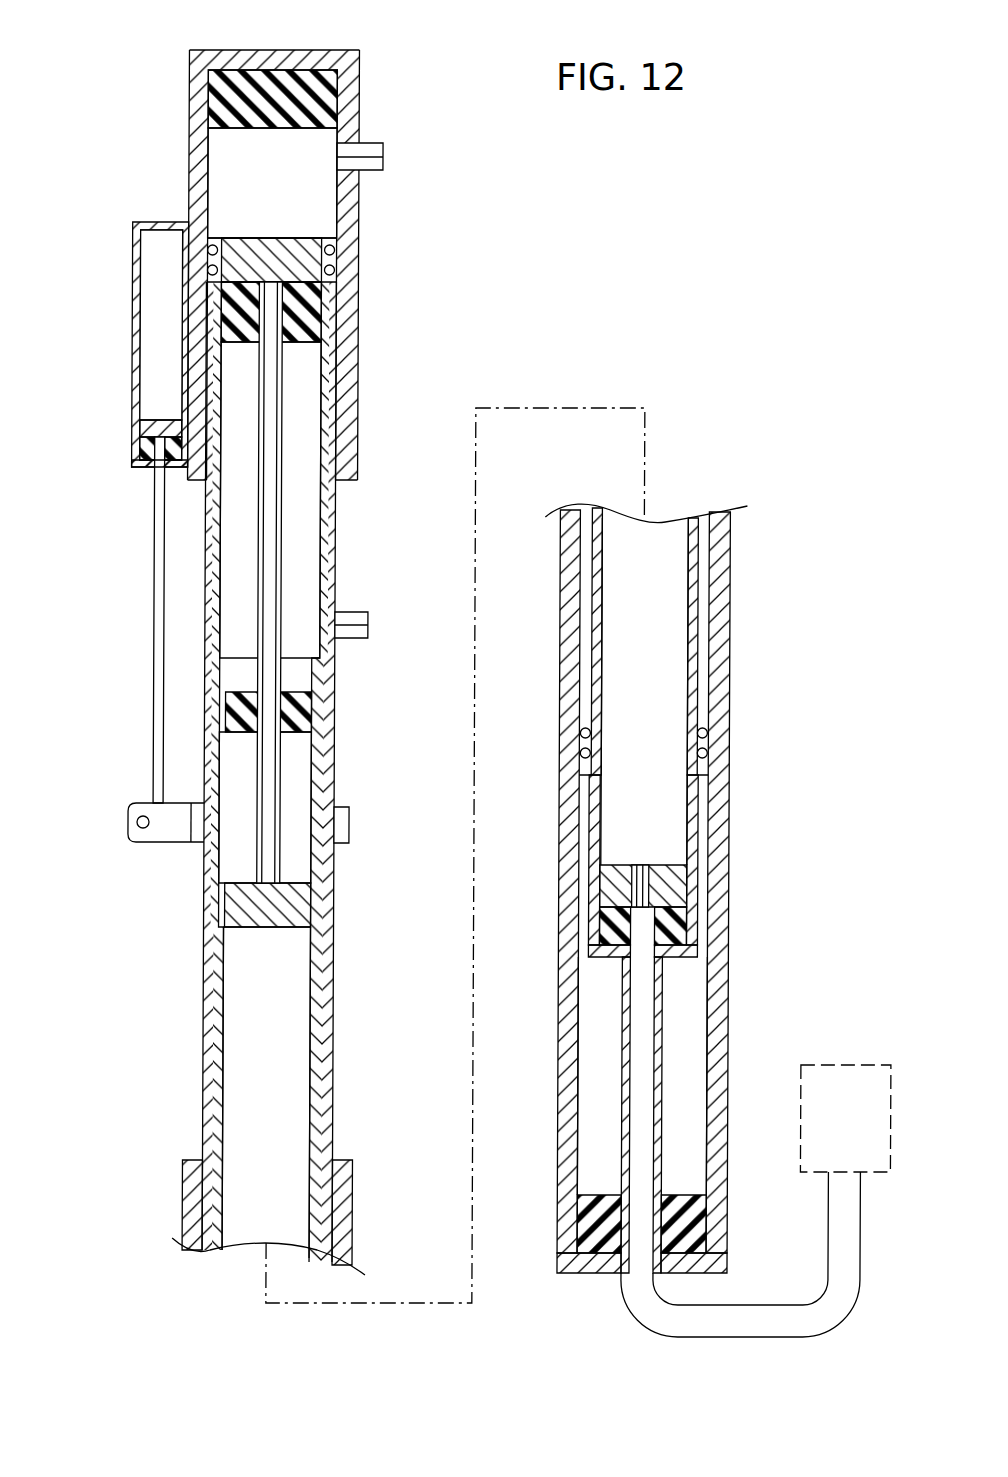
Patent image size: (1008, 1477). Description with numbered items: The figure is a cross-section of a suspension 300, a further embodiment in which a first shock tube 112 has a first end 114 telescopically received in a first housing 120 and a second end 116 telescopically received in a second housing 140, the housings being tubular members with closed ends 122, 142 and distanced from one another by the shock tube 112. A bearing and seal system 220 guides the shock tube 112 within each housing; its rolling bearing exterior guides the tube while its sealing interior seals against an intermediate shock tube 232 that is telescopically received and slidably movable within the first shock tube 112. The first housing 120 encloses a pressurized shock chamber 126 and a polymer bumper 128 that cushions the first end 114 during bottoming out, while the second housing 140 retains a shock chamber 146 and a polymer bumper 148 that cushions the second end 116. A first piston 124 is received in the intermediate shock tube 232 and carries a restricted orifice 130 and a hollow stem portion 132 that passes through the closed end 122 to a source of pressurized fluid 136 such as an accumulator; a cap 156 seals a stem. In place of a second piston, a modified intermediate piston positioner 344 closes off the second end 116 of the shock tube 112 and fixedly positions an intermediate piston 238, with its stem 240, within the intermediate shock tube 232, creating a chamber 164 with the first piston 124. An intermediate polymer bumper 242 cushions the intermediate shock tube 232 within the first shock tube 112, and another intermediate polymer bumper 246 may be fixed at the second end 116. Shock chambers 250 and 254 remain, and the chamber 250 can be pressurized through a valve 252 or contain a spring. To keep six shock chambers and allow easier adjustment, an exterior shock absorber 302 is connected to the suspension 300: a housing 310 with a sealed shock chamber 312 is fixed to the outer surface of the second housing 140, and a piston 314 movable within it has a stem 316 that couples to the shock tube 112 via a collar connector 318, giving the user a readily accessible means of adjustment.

The shock tube 112 is at (326, 982).
The first end 114 is at (703, 667).
The second end 116 is at (330, 355).
The first housing 120 is at (721, 862).
The closed end 122 is at (691, 1263).
The first piston 124 is at (604, 892).
The shock chamber 126 is at (689, 988).
The polymer bumper 128 is at (700, 1213).
The restricted orifice 130 is at (649, 867).
The stem portion 132 is at (624, 1118).
The source of pressurized fluid 136 is at (825, 1065).
The second housing 140 is at (348, 207).
The closed end 142 is at (220, 53).
The second sealed shock chamber 146 is at (222, 169).
The polymer bumper 148 is at (215, 79).
The cap 156 is at (638, 1293).
The chamber 164 is at (244, 1107).
The bearing and seal system 220 is at (345, 253).
The intermediate shock tube 232 is at (596, 808).
The intermediate piston 238 is at (295, 898).
The stem 240 is at (283, 533).
The intermediate polymer bumper 242 is at (306, 699).
The intermediate polymer bumper 246 is at (337, 309).
The shock chamber 250 is at (303, 507).
The valve 252 is at (350, 612).
The shock chamber 254 is at (293, 775).
The suspension 300 is at (565, 328).
The exterior shock absorber 302 is at (118, 483).
The housing 310 is at (130, 266).
The sealed shock chamber 312 is at (147, 305).
The piston 314 is at (142, 424).
The stem 316 is at (153, 600).
The collar connector 318 is at (137, 805).
The intermediate piston positioner 344 is at (254, 252).